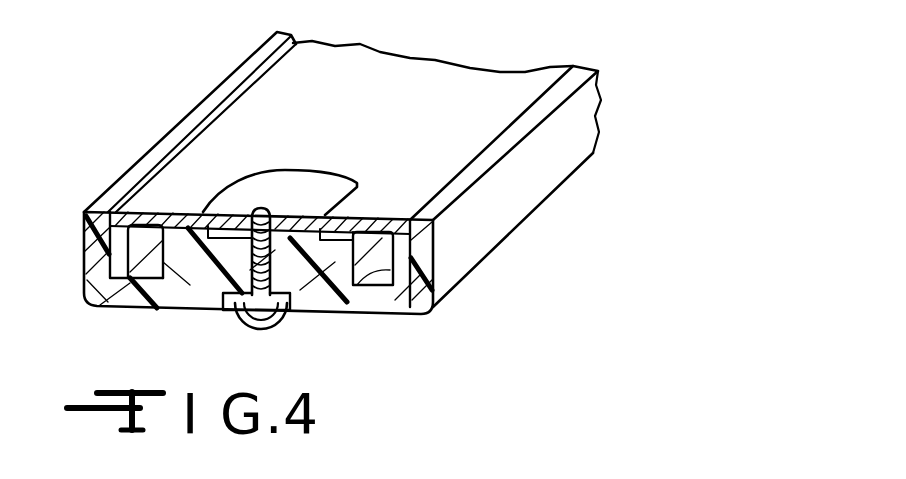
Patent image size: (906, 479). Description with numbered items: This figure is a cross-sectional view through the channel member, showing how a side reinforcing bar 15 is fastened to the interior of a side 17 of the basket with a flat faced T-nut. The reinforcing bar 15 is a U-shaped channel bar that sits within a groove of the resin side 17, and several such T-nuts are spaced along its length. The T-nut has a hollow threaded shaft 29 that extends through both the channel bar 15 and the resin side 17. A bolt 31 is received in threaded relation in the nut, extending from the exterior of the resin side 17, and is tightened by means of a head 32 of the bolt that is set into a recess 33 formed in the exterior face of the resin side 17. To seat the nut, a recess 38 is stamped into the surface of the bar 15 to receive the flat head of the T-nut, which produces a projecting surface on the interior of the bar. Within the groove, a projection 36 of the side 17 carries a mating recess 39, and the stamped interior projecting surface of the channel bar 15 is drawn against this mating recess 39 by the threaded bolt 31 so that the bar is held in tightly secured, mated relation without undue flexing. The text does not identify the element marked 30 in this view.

The side reinforcing bar 15 is at (498, 88).
The side of the basket 17 is at (528, 188).
The hollow threaded shaft 29 is at (327, 237).
The dome cover 30 is at (303, 181).
The bolt 31 is at (210, 298).
The head of the bolt 32 is at (262, 328).
The recess 33 is at (333, 317).
The projection 36 is at (382, 313).
The recess 38 is at (182, 250).
The mating recess 39 is at (150, 300).